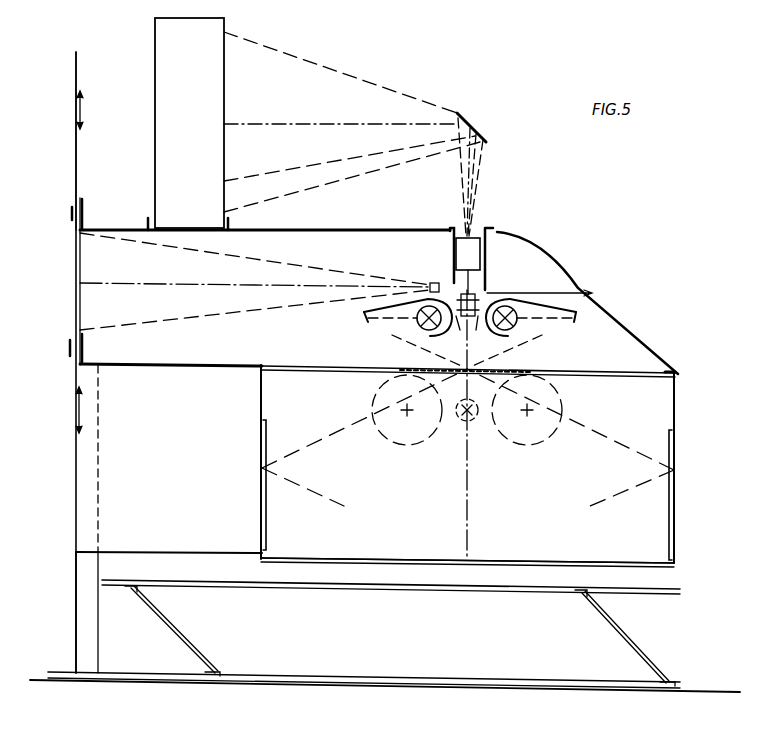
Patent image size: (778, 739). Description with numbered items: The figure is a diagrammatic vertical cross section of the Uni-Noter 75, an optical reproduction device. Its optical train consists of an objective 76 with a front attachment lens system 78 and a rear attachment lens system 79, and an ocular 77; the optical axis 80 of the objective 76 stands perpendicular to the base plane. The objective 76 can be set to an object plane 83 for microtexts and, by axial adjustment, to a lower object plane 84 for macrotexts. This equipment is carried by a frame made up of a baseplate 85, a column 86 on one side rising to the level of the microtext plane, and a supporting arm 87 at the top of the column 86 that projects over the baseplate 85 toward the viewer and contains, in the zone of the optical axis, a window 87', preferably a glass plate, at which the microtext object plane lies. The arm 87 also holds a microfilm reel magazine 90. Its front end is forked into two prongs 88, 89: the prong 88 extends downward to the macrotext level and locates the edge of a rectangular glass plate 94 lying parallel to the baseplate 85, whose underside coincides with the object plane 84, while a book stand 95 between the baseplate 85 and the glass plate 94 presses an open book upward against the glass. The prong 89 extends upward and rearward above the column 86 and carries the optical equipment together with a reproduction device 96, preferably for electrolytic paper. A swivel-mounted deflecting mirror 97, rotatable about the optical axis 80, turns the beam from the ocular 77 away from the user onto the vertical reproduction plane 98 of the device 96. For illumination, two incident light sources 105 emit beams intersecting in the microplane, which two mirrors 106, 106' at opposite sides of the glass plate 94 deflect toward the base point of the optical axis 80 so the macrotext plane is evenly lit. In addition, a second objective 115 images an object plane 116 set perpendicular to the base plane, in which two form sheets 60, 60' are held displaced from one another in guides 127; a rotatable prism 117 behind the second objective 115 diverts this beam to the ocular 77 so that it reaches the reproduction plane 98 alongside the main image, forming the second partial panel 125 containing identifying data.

The form sheet 60 is at (58, 362).
The form sheet 60' is at (56, 141).
The Uni-Noter 75 is at (68, 361).
The objective 76 is at (461, 318).
The ocular 77 is at (458, 240).
The front attachment lens system 78 is at (476, 320).
The rear attachment lens system 79 is at (480, 298).
The optical axis 80 is at (468, 496).
The object plane for microtexts 83 is at (592, 368).
The object plane for macrotexts 84 is at (522, 560).
The baseplate 85 is at (134, 675).
The column 86 is at (86, 587).
The supporting arm 87 is at (395, 315).
The window 87' is at (273, 449).
The prong 88 is at (676, 414).
The prong 89 is at (608, 306).
The microfilm reel magazine 90 is at (380, 430).
The glass plate 94 is at (598, 560).
The book stand 95 is at (585, 600).
The reproduction device 96 is at (188, 124).
The deflecting mirror 97 is at (466, 120).
The reproduction plane 98 is at (224, 156).
The incident light sources 105 is at (416, 330).
The deflecting mirror 106 is at (283, 485).
The deflecting mirror 106' is at (647, 495).
The second objective 115 is at (432, 283).
The object plane 116 is at (82, 278).
The prism 117 is at (460, 296).
The second partial panel 125 is at (224, 191).
The guides 127 is at (84, 217).